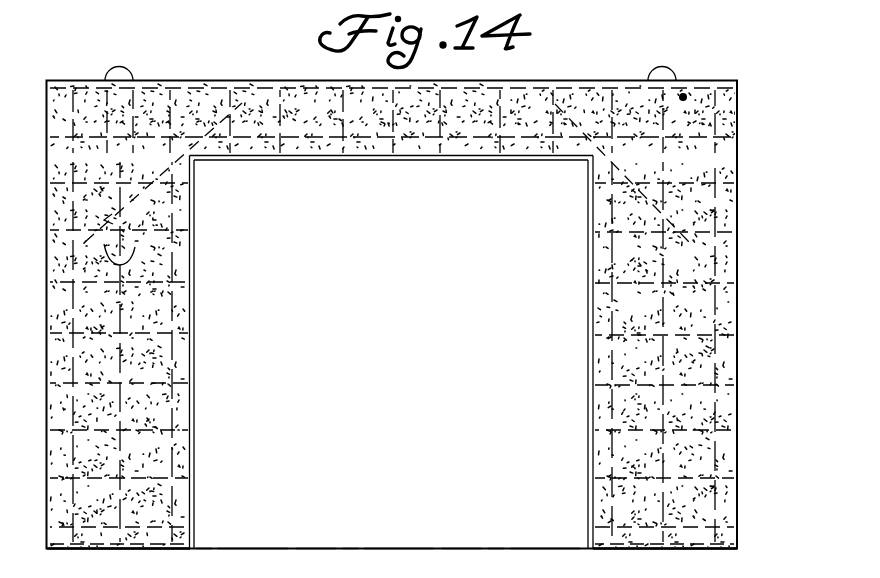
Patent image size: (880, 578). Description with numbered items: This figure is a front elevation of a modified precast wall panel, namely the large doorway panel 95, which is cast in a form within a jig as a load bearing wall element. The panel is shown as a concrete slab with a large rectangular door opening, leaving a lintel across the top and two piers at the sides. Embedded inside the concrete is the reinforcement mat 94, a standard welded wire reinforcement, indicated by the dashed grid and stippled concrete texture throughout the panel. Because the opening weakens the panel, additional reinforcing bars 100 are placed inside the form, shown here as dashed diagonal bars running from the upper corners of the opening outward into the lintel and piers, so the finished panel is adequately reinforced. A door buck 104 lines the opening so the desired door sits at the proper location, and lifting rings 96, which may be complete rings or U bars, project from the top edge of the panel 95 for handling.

The reinforcement mat 94 is at (683, 382).
The doorway panel 95 is at (412, 149).
The lifting rings 96 is at (119, 66).
The additional reinforcing bars 100 is at (214, 80).
The door buck 104 is at (192, 324).